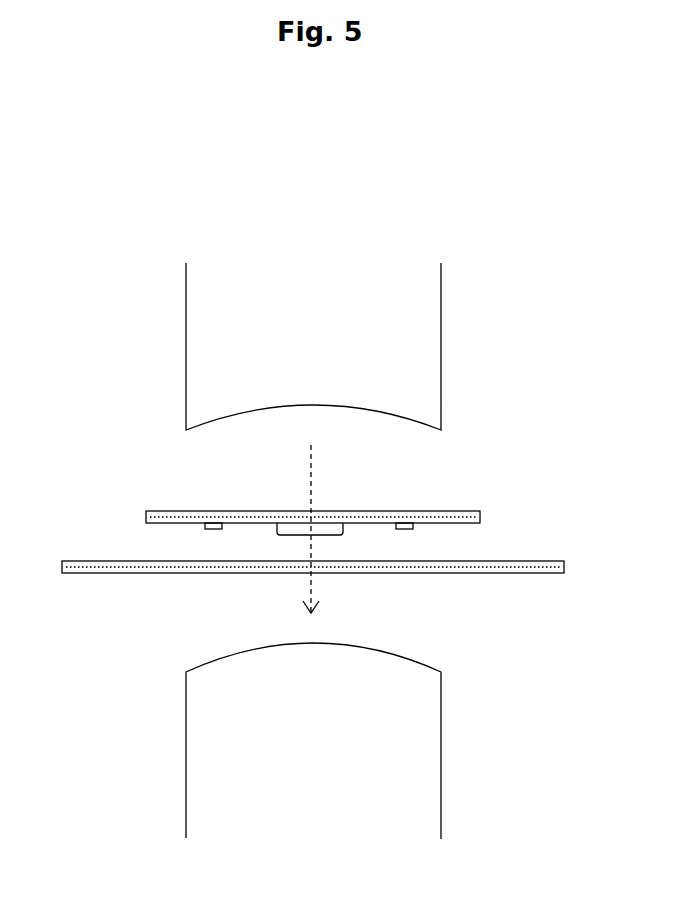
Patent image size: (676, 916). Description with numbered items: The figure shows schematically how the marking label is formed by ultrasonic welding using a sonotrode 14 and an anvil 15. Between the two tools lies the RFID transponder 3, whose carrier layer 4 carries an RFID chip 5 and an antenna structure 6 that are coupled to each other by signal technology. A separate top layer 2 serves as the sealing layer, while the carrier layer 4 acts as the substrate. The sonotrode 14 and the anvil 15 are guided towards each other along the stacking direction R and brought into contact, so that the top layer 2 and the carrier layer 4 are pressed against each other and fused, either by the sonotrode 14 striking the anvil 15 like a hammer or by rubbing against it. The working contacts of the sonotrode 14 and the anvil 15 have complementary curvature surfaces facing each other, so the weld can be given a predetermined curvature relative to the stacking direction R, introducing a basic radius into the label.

The top layer 2 is at (98, 567).
The RFID transponder 3 is at (478, 457).
The carrier layer 4 is at (159, 518).
The RFID chip 5 is at (287, 530).
The antenna structure 6 is at (212, 525).
The sonotrode 14 is at (222, 329).
The anvil 15 is at (242, 738).
The stacking direction R is at (312, 462).